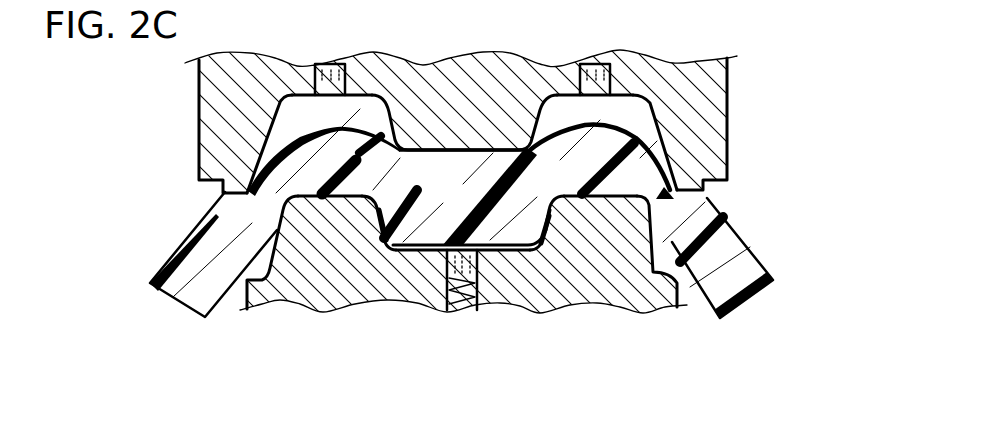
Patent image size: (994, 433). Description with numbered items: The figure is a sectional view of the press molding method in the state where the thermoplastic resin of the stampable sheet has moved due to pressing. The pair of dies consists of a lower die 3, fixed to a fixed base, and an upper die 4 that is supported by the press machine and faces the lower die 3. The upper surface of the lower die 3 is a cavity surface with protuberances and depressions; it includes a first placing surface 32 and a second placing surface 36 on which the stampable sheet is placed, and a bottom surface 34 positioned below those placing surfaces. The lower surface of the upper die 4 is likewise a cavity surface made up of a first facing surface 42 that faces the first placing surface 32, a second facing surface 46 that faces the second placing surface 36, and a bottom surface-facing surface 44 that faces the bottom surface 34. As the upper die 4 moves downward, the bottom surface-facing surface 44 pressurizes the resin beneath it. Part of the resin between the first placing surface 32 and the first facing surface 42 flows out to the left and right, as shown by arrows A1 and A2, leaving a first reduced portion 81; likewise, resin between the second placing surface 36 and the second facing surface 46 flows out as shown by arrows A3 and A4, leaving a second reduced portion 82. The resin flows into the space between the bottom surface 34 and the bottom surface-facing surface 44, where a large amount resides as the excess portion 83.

The lower die 3 is at (680, 298).
The upper die 4 is at (727, 118).
The first placing surface 32 is at (308, 196).
The bottom surface 34 is at (414, 251).
The second placing surface 36 is at (608, 196).
The first facing surface 42 is at (288, 108).
The bottom surface-facing surface 44 is at (463, 158).
The second facing surface 46 is at (637, 108).
The first reduced portion 81 is at (318, 140).
The second reduced portion 82 is at (609, 140).
The excess portion 83 is at (473, 215).
The arrow A1 is at (243, 191).
The arrow A2 is at (414, 188).
The arrow A3 is at (567, 158).
The arrow A4 is at (668, 168).